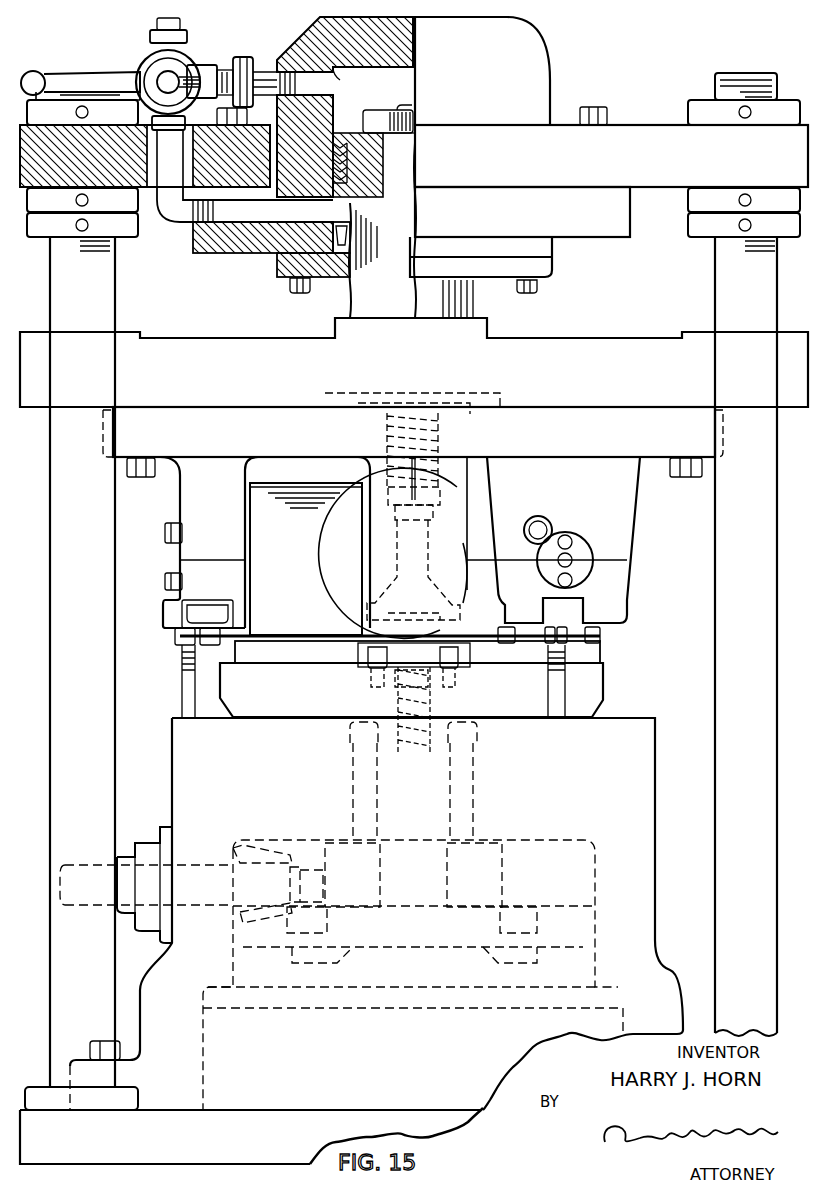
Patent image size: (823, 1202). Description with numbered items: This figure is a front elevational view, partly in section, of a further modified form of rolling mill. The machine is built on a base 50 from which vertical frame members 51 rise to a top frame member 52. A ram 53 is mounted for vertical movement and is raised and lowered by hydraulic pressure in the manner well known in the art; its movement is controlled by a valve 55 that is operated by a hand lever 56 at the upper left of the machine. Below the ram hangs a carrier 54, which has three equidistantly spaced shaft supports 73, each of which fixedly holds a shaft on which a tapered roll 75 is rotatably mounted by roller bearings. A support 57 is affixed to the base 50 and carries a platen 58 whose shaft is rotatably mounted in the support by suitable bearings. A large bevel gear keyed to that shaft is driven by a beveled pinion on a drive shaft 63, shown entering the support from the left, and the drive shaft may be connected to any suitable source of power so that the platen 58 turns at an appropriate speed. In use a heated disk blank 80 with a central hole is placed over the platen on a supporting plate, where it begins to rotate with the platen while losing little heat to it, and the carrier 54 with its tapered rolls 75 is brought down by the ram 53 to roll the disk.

The base 50 is at (251, 1125).
The vertical frame members 51 is at (107, 752).
The top frame member 52 is at (618, 132).
The ram 53 is at (317, 343).
The carrier 54 is at (413, 442).
The valve 55 is at (192, 58).
The hand lever 56 is at (100, 77).
The support 57 is at (645, 777).
The platen 58 is at (411, 698).
The drive shaft 63 is at (97, 867).
The shaft supports 73 is at (400, 587).
The tapered roll 75 is at (307, 546).
The disk blank 80 is at (343, 642).